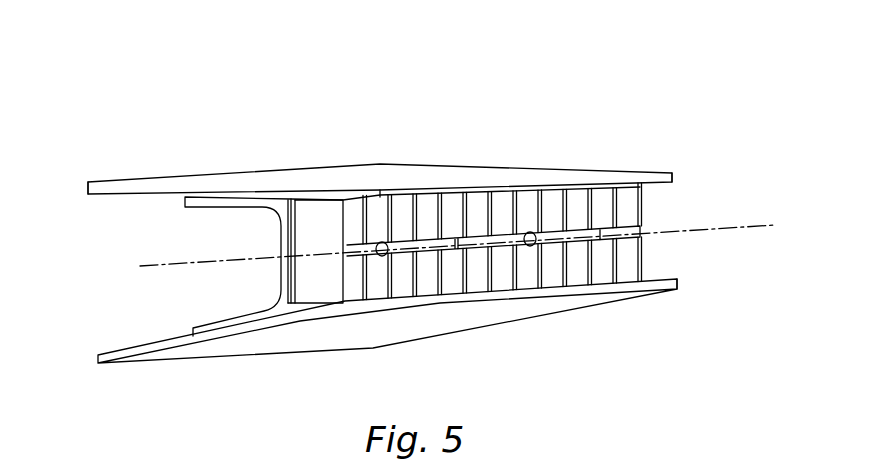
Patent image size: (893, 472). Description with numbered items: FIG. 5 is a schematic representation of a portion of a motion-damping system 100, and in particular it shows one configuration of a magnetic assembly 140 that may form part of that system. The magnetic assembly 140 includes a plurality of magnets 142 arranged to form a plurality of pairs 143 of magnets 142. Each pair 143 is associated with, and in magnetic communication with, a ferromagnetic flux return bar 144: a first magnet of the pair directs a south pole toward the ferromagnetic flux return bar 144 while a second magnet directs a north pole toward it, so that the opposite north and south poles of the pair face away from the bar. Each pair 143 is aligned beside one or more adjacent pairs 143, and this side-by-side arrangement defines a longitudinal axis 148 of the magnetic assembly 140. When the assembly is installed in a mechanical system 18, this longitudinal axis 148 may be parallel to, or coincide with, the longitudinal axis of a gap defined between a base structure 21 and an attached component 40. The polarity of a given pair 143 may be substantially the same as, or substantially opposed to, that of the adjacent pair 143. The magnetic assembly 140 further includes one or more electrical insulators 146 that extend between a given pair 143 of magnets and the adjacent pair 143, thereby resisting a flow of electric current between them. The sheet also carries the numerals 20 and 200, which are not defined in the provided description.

The mechanical system 18 is at (649, 80).
The floor assembly 20 is at (675, 114).
The base structure 21 is at (107, 182).
The attached component 40 is at (160, 182).
The motion-damping system 100 is at (708, 156).
The magnetic assembly 140 is at (438, 146).
The magnets 142 is at (630, 217).
The pairs of magnets 143 is at (433, 286).
The ferromagnetic flux return bar 144 is at (290, 227).
The electrical insulators 146 is at (310, 287).
The longitudinal axis 148 is at (733, 228).
The seat assembly 200 is at (656, 469).